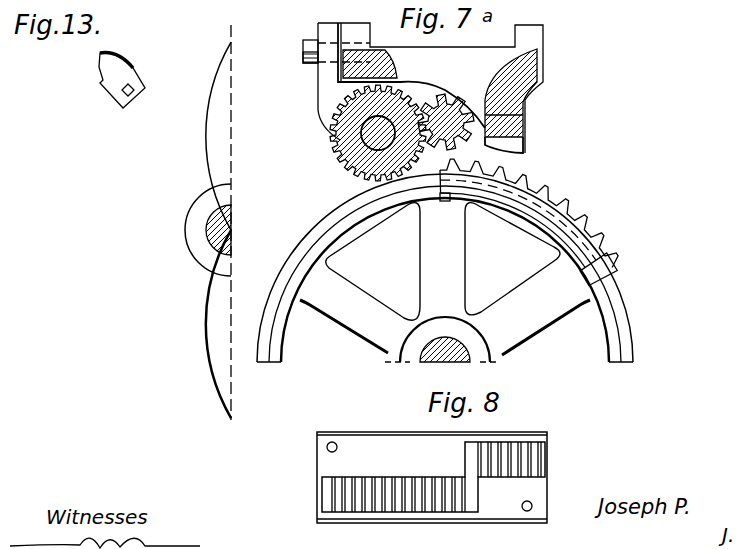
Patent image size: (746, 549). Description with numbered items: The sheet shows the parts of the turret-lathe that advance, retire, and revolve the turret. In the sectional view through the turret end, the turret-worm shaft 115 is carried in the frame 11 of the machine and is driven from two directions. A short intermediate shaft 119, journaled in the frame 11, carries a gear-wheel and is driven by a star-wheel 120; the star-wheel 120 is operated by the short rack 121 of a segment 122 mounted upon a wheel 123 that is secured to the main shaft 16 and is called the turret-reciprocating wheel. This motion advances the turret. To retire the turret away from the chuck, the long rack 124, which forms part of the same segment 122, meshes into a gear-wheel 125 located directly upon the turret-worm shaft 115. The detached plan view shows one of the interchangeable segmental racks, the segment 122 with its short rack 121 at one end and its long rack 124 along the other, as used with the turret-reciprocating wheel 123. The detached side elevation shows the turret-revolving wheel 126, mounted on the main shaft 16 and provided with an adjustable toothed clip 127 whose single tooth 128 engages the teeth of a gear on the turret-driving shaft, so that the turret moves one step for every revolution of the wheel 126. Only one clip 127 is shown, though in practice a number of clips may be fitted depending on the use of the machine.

In FIG. 7A, the frame 11 is at (318, 92).
In FIG. 13, the main shaft 16 is at (206, 230).
In FIG. 7A, the main shaft 16 is at (445, 345).
In FIG. 7A, the turret-worm shaft 115 is at (525, 116).
In FIG. 7A, the short intermediate shaft 119 is at (362, 135).
In FIG. 7A, the star-wheel 120 is at (338, 150).
In FIG. 7A, the short rack 121 is at (588, 221).
In FIG. 8, the short rack 121 is at (510, 452).
In FIG. 8, the segment 122 is at (432, 477).
In FIG. 7A, the turret-reciprocating wheel 123 is at (603, 297).
In FIG. 7A, the long rack 124 is at (548, 192).
In FIG. 8, the long rack 124 is at (322, 493).
In FIG. 7A, the gear-wheel 125 is at (440, 100).
In FIG. 13, the turret-revolving wheel 126 is at (174, 222).
In FIG. 13, the adjustable toothed clip 127 is at (134, 67).
In FIG. 13, the single tooth 128 is at (104, 67).